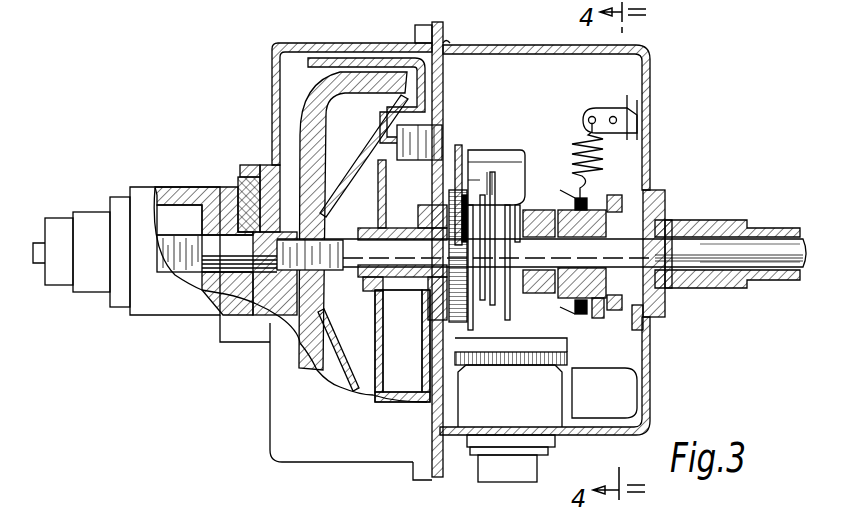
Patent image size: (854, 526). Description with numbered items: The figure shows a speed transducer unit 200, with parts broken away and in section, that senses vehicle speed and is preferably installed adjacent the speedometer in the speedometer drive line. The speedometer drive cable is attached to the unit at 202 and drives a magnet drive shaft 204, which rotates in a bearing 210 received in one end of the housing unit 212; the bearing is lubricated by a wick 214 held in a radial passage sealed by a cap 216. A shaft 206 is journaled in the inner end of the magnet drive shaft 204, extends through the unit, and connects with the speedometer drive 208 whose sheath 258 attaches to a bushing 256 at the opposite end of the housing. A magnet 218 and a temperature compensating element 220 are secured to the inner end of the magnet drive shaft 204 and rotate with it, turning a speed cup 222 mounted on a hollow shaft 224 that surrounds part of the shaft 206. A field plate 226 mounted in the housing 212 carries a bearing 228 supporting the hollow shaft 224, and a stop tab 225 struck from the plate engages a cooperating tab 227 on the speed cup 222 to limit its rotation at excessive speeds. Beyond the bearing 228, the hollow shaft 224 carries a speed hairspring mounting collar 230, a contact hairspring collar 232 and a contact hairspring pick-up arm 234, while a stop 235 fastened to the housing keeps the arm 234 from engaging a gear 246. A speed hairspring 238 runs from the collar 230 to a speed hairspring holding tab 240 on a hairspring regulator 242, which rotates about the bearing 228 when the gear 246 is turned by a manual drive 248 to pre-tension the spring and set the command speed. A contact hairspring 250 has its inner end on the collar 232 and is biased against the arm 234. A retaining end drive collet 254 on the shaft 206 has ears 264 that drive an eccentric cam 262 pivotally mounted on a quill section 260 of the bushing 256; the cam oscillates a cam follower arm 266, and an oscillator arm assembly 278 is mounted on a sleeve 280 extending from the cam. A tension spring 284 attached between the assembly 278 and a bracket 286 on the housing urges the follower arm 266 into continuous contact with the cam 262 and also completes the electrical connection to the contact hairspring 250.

The speed transducer unit 200 is at (457, 31).
The speedometer drive cable attachment 202 is at (178, 272).
The magnet drive shaft 204 is at (217, 245).
The shaft 206 is at (330, 270).
The speedometer drive 208 is at (770, 240).
The bearing 210 is at (215, 195).
The housing unit 212 is at (262, 114).
The wick 214 is at (248, 195).
The cap 216 is at (256, 165).
The magnet 218 is at (335, 90).
The temperature compensating element 220 is at (343, 165).
The speed cup 222 is at (385, 58).
The hollow shaft 224 is at (410, 285).
The stop tab 225 is at (405, 158).
The field plate 226 is at (446, 78).
The cooperating tab 227 is at (398, 145).
The bearing 228 is at (428, 212).
The speed hairspring mounting collar 230 is at (476, 300).
The contact hairspring collar 232 is at (539, 282).
The contact hairspring pick-up arm 234 is at (505, 155).
The stop 235 is at (608, 372).
The speed hairspring 238 is at (511, 349).
The speed hairspring holding tab 240 is at (477, 185).
The hairspring regulator 242 is at (458, 148).
The gear 246 is at (543, 365).
The manual drive 248 is at (516, 478).
The contact hairspring 250 is at (503, 295).
The retaining end drive collet 254 is at (540, 204).
The bushing 256 is at (665, 200).
The sheath 258 is at (762, 288).
The quill section 260 is at (600, 238).
The eccentric cam 262 is at (612, 200).
The ears 264 is at (575, 300).
The cam follower arm 266 is at (640, 323).
The oscillator arm assembly 278 is at (595, 312).
The sleeve 280 is at (600, 315).
The tension spring 284 is at (575, 146).
The bracket 286 is at (618, 110).